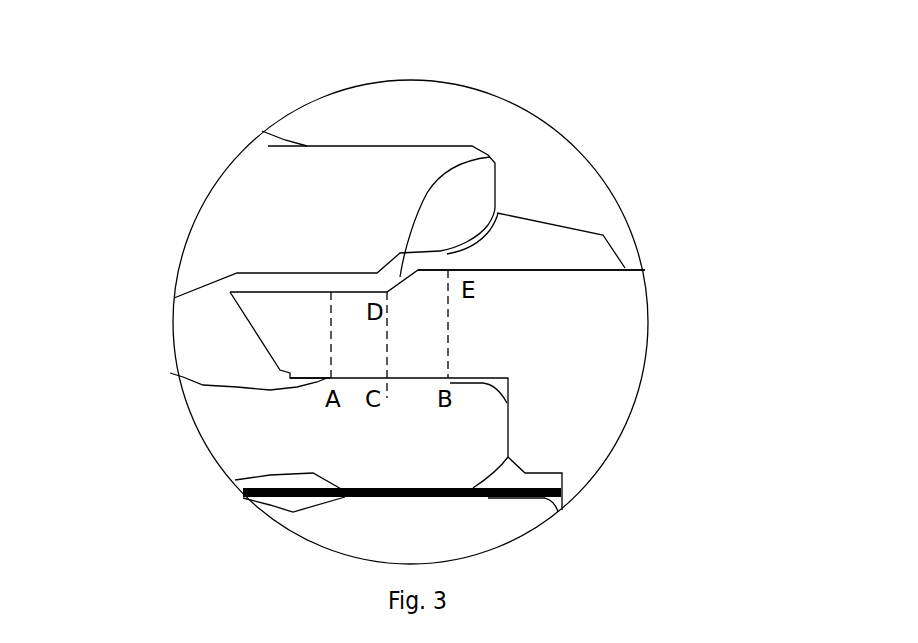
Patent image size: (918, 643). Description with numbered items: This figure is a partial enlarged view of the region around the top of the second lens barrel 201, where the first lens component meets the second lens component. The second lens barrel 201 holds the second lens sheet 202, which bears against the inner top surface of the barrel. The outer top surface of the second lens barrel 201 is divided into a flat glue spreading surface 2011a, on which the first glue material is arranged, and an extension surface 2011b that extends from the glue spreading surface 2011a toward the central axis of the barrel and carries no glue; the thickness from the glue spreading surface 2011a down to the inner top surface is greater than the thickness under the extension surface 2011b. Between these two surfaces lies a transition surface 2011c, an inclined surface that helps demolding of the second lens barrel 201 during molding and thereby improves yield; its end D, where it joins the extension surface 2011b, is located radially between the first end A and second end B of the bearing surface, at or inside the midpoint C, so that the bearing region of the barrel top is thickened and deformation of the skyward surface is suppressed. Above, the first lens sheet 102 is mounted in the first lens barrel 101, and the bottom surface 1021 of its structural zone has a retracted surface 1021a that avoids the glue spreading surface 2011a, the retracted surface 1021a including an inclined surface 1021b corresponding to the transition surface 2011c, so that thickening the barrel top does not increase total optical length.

The first lens barrel 101 is at (561, 184).
The first lens sheet 102 is at (329, 133).
The bottom surface of the structural zone 1021 is at (274, 243).
The retracted surface 1021a is at (540, 166).
The inclined surface 1021b is at (416, 147).
The second lens barrel 201 is at (466, 390).
The second lens sheet 202 is at (303, 471).
The glue spreading surface 2011a is at (618, 209).
The extension surface 2011b is at (434, 164).
The transition surface 2011c is at (518, 130).